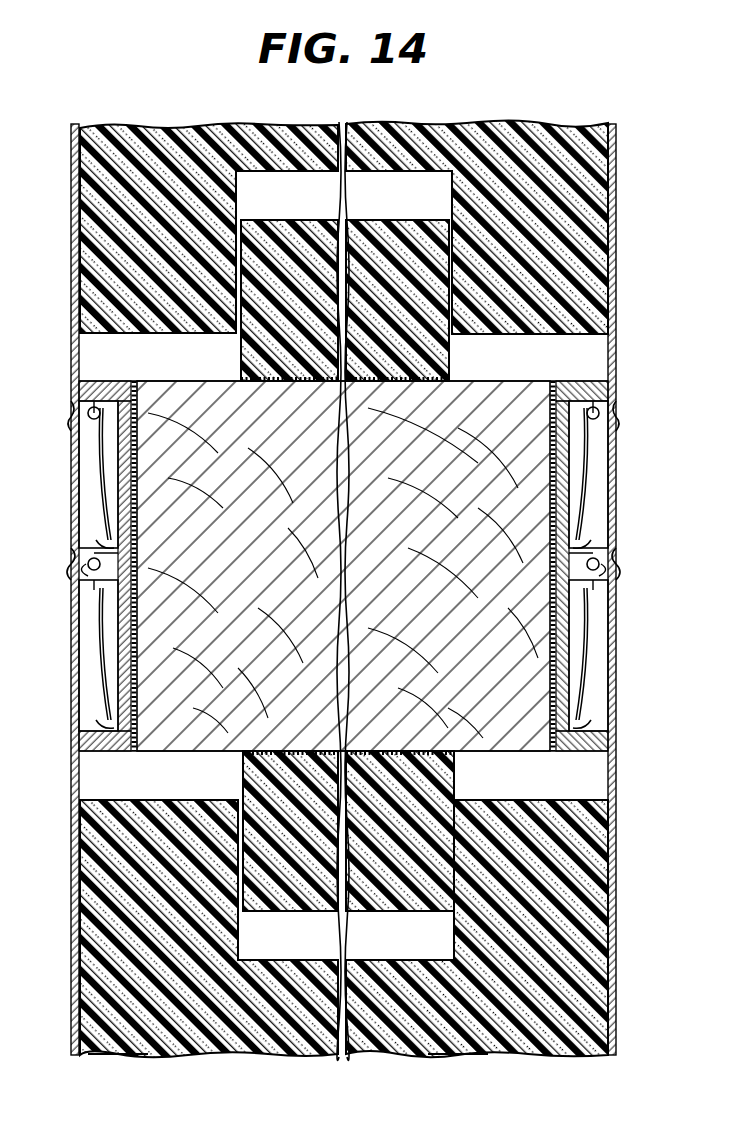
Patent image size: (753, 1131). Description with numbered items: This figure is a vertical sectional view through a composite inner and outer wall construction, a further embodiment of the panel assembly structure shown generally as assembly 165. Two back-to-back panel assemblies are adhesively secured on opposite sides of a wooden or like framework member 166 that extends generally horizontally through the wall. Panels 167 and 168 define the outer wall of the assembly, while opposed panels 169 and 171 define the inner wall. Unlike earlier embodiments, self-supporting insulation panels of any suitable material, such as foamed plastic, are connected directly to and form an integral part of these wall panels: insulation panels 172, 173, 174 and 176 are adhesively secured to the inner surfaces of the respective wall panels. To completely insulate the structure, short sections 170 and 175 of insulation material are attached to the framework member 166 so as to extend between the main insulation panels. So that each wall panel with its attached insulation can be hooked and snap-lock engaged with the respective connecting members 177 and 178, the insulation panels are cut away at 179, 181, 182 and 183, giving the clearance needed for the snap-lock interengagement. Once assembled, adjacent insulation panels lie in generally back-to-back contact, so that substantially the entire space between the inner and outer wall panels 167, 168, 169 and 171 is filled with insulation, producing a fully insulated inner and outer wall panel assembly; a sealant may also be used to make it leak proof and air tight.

The mold assembly 165 is at (628, 444).
The framework member 166 is at (512, 360).
The outer wall panel 167 is at (606, 320).
The outer wall panel 168 is at (611, 868).
The inner wall panel 169 is at (63, 301).
The short section of insulation material 170 is at (333, 214).
The inner wall panel 171 is at (70, 902).
The insulation panel 172 is at (446, 1050).
The insulation panel 173 is at (528, 93).
The insulation panel 174 is at (146, 90).
The short section of insulation material 175 is at (303, 902).
The insulation panel 176 is at (130, 1048).
The connecting member 177 is at (560, 637).
The connecting member 178 is at (110, 607).
The cut away 179 is at (599, 770).
The cut away 181 is at (595, 354).
The cut away 182 is at (82, 347).
The cut away 183 is at (90, 765).